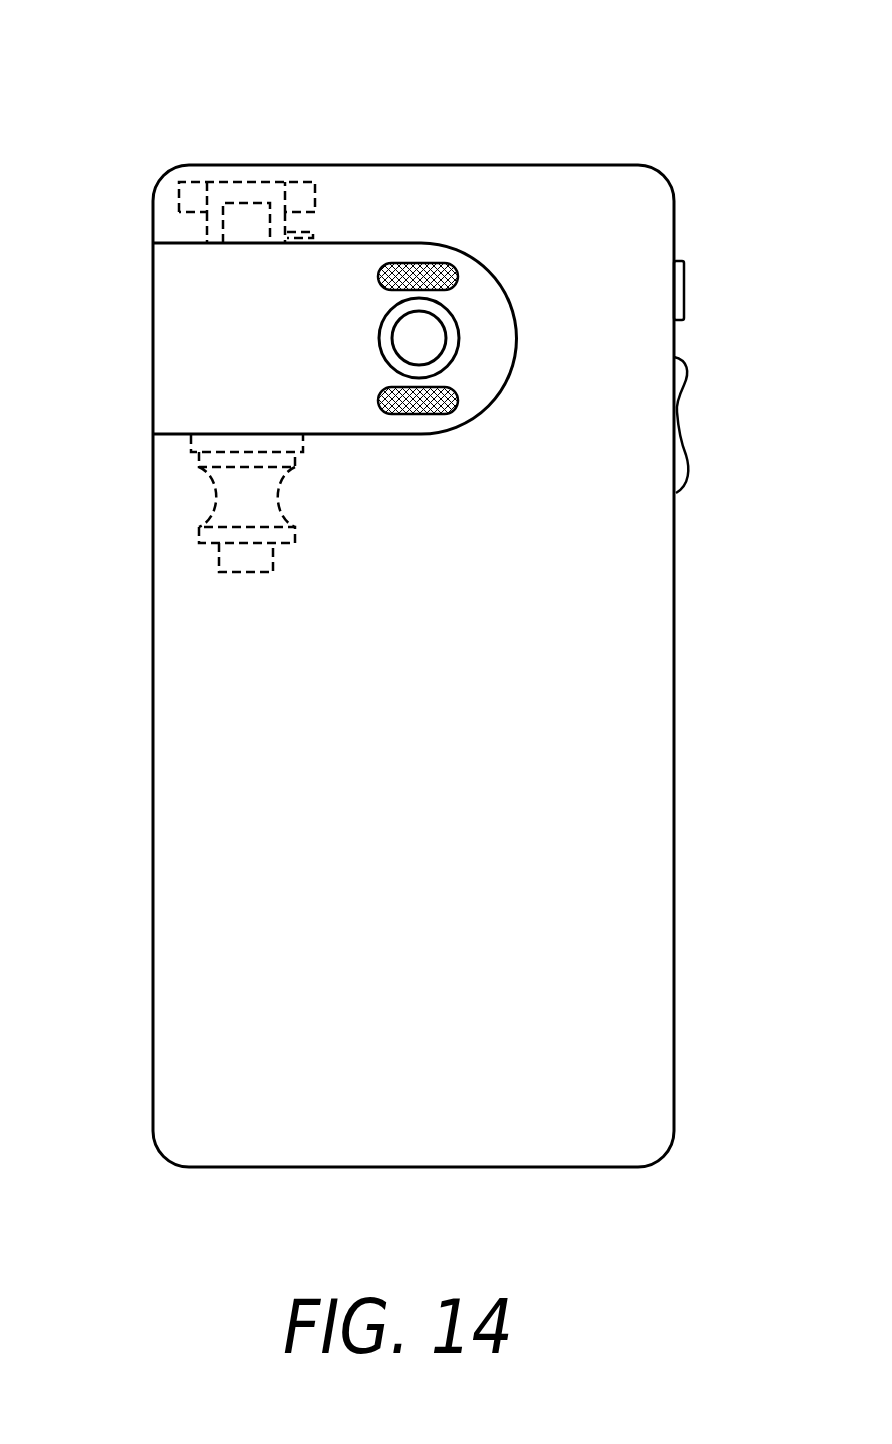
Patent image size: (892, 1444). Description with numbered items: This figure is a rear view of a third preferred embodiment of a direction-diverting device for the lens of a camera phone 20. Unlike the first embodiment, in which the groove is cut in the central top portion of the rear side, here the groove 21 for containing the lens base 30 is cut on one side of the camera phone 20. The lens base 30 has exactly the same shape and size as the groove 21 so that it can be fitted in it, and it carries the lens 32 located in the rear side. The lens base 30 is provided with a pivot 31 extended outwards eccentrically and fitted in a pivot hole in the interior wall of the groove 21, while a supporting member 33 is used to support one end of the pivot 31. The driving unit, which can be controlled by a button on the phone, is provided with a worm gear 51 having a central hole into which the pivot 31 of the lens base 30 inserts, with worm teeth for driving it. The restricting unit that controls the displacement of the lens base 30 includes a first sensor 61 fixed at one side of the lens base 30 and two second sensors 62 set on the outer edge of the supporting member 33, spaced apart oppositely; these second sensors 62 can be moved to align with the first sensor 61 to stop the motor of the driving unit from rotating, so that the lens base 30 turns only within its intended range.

The camera phone 20 is at (610, 586).
The groove 21 is at (517, 353).
The lens base 30 is at (490, 320).
The pivot 31 is at (240, 218).
The lens 32 is at (423, 333).
The supporting member 33 is at (255, 218).
The worm gear 51 is at (243, 500).
The first sensor 61 is at (317, 235).
The second sensor 62 is at (190, 197).